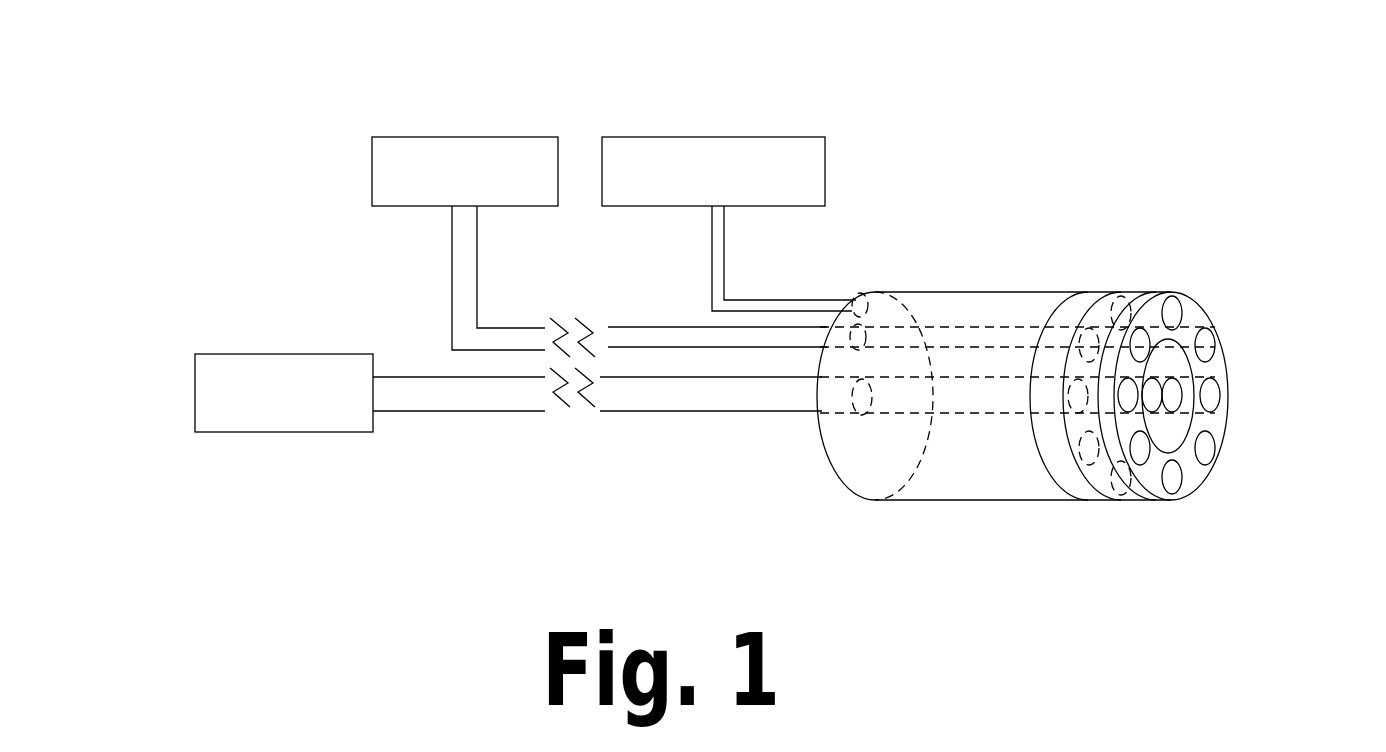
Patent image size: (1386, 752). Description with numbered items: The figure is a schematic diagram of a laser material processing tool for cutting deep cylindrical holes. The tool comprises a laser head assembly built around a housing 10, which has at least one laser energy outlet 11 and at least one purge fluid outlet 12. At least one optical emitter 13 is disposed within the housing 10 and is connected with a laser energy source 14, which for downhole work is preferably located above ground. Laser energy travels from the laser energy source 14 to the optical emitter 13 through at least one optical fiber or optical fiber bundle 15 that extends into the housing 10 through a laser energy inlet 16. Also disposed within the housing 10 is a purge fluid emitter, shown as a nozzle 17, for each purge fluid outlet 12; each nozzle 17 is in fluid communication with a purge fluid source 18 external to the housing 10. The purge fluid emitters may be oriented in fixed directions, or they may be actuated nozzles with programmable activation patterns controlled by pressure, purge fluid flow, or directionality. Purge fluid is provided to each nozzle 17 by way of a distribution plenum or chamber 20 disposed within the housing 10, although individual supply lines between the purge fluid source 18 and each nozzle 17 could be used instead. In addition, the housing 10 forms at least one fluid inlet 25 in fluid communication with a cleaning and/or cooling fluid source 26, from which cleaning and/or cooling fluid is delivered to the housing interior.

The housing 10 is at (975, 291).
The laser energy outlet 11 is at (1170, 385).
The purge fluid outlet 12 is at (1213, 462).
The optical emitter 13 is at (1133, 505).
The laser energy source 14 is at (283, 432).
The optical fiber or optical fiber bundle 15 is at (628, 414).
The laser energy inlet 16 is at (848, 405).
The nozzle 17 is at (1097, 505).
The purge fluid source 18 is at (473, 137).
The distribution plenum or chamber 20 is at (1063, 478).
The fluid inlet 25 is at (875, 290).
The cleaning and/or cooling fluid source 26 is at (718, 137).